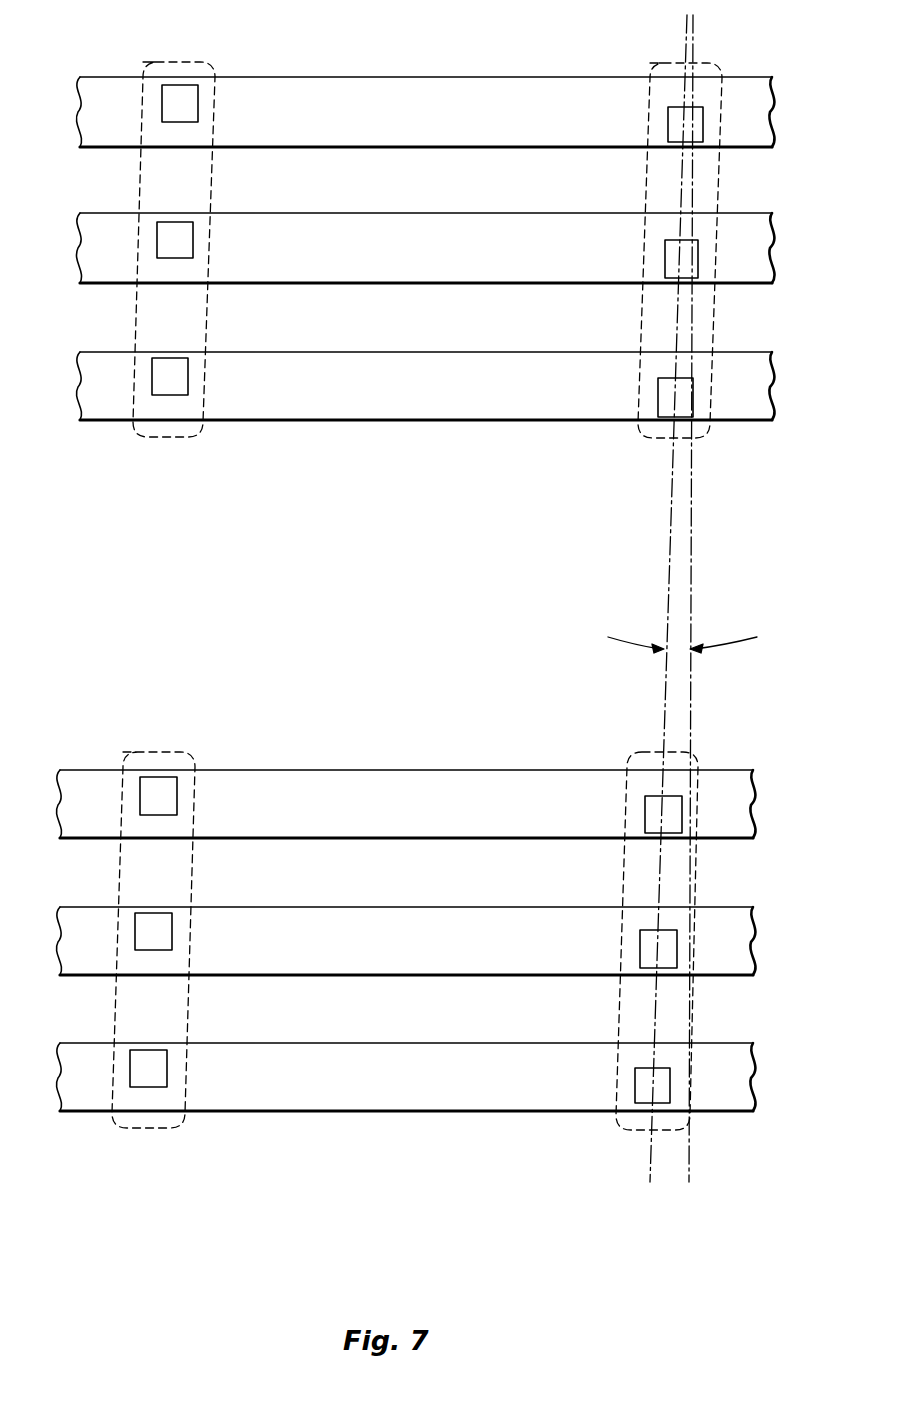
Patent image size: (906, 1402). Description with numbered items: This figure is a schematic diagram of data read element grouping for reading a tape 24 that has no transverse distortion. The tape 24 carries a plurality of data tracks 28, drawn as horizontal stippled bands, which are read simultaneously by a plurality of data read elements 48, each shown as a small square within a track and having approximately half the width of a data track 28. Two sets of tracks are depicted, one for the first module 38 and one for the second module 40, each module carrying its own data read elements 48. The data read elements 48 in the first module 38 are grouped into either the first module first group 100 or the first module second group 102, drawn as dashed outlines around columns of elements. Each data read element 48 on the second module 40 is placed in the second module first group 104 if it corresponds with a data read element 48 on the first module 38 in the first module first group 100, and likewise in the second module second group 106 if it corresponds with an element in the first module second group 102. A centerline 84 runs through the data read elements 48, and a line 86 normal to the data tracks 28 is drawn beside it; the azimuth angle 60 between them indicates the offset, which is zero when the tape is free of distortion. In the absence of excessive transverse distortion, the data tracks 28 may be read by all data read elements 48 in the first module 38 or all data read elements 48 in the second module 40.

The tape 24 is at (244, 1176).
The data track 28 is at (323, 148).
The first module 38 is at (638, 1161).
The second module 40 is at (127, 1176).
The data read element 48 is at (178, 85).
The azimuth angle 60 is at (628, 645).
The centerline 84 is at (670, 566).
The line normal to data tracks 86 is at (690, 565).
The first module first group 100 is at (660, 440).
The first module second group 102 is at (643, 752).
The second module first group 104 is at (153, 440).
The second module second group 106 is at (131, 1128).